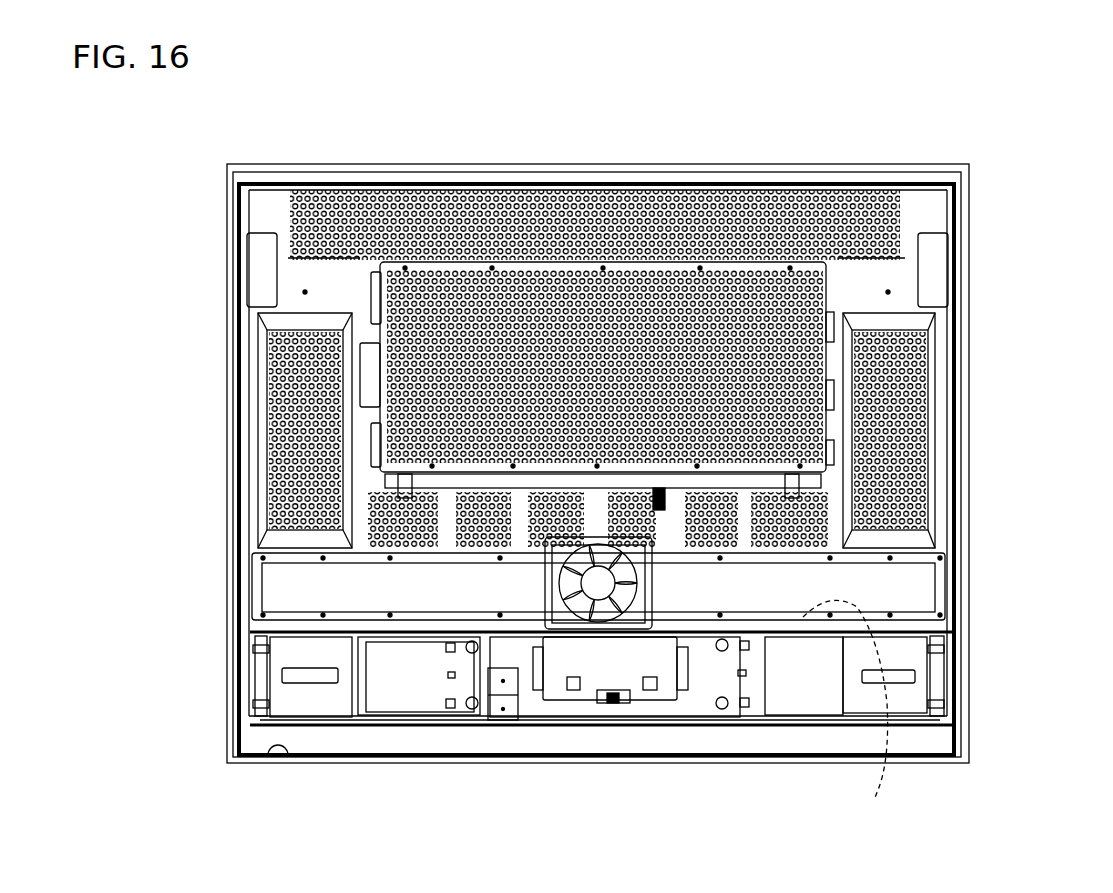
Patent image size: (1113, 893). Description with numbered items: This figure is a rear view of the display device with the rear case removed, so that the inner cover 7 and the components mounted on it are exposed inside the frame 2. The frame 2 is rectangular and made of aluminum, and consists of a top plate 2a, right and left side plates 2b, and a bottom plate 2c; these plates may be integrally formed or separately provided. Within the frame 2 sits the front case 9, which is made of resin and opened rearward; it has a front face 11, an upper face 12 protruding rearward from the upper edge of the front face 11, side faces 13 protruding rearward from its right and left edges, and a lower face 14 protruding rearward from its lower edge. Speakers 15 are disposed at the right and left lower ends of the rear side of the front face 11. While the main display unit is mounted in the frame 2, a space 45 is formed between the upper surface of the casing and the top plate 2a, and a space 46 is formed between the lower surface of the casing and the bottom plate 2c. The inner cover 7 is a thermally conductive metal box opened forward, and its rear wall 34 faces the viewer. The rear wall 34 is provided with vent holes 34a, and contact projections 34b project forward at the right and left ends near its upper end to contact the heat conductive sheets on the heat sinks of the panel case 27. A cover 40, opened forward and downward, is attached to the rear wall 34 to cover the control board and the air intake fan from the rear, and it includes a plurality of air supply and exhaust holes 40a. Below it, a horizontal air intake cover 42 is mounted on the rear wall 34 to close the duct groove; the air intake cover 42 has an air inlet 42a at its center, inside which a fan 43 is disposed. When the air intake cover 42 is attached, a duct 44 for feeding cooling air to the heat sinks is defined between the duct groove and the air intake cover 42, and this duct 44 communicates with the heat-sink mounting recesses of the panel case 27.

The frame 2 is at (798, 185).
The top plate 2a is at (862, 172).
The side plate 2b is at (262, 290).
The bottom plate 2c is at (495, 763).
The inner cover 7 is at (918, 190).
The front case 9 is at (640, 735).
The front face 11 is at (690, 715).
The upper face 12 is at (748, 232).
The side face 13 is at (240, 638).
The lower face 14 is at (855, 725).
The speaker 15 is at (415, 700).
The panel case 27 is at (967, 207).
The rear wall 34 is at (258, 196).
The vent holes 34a is at (405, 232).
The contact projections 34b is at (262, 290).
The cover 40 is at (730, 290).
The air supply and exhaust holes 40a is at (428, 300).
The air intake cover 42 is at (933, 587).
The air inlet 42a is at (600, 635).
The fan 43 is at (582, 630).
The duct 44 is at (857, 721).
The space 45 is at (293, 200).
The space 46 is at (285, 755).